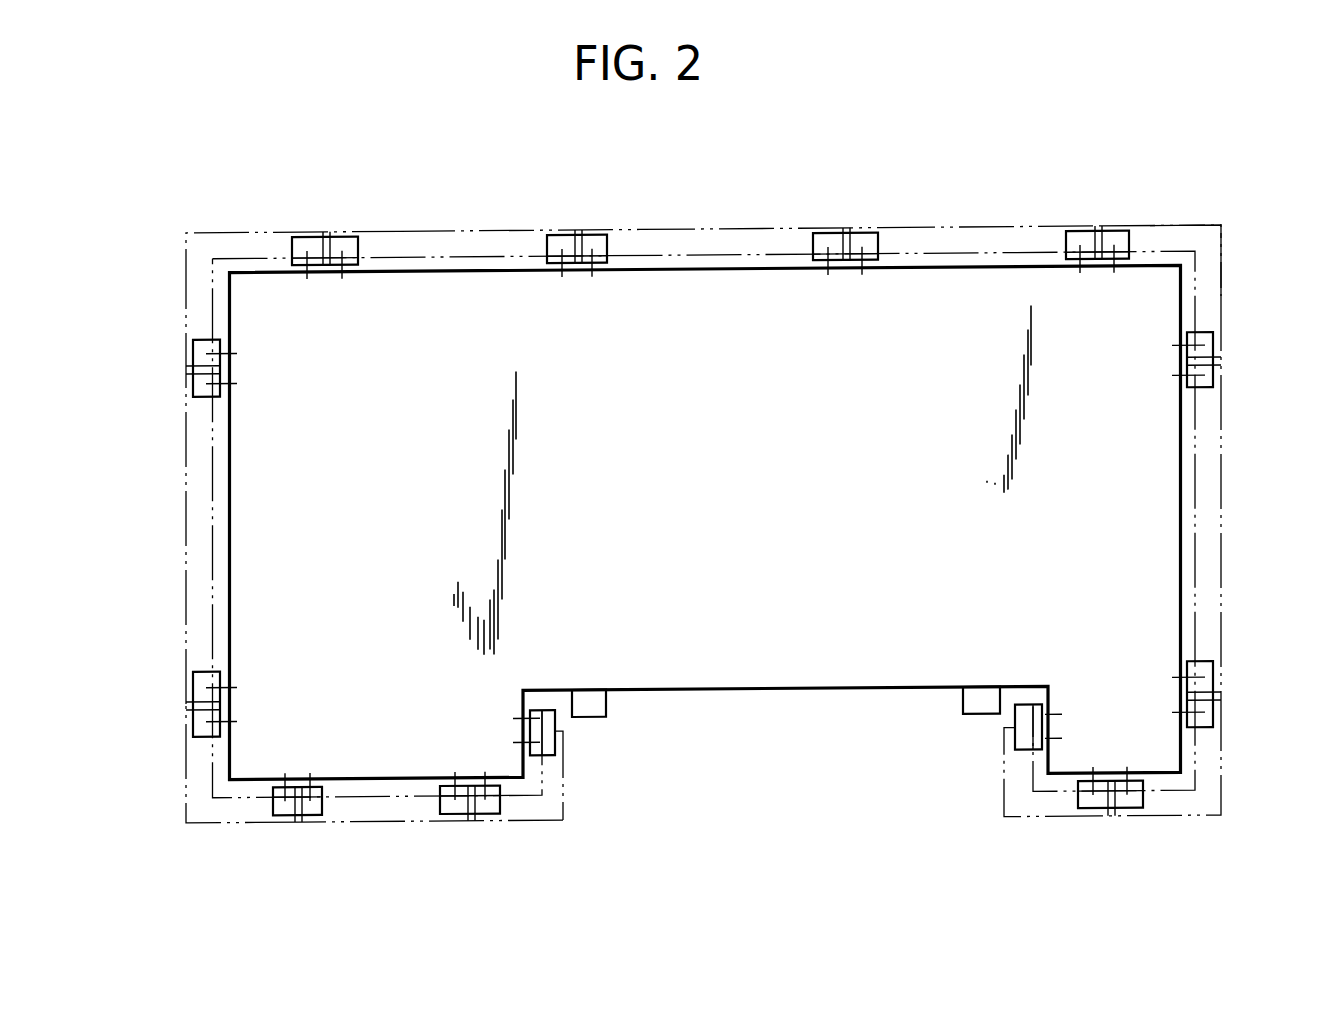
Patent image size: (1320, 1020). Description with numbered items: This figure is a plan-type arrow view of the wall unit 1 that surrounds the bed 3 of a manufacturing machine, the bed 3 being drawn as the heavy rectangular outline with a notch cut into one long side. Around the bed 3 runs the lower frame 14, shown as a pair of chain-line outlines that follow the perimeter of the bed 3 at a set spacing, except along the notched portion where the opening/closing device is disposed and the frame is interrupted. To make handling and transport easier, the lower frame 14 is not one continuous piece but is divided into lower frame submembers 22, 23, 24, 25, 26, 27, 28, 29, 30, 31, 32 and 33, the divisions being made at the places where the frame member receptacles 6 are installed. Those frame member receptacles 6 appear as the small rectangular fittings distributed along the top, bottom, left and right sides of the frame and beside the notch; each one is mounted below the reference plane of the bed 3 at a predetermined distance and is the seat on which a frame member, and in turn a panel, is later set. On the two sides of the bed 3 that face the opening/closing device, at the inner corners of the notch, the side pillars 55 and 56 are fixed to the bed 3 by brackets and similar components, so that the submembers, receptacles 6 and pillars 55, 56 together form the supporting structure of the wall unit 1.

The wall unit 1 is at (1248, 245).
The bed 3 is at (717, 690).
The frame member receptacle 6 is at (336, 238).
The lower frame 14 is at (1022, 225).
The lower frame submember 22 is at (1005, 768).
The lower frame submember 23 is at (1224, 752).
The lower frame submember 24 is at (1232, 568).
The lower frame submember 25 is at (1190, 224).
The lower frame submember 26 is at (977, 226).
The lower frame submember 27 is at (725, 228).
The lower frame submember 28 is at (510, 230).
The lower frame submember 29 is at (252, 232).
The lower frame submember 30 is at (215, 632).
The lower frame submember 31 is at (187, 810).
The lower frame submember 32 is at (368, 823).
The lower frame submember 33 is at (545, 823).
The side pillar 55 is at (594, 718).
The side pillar 56 is at (966, 718).